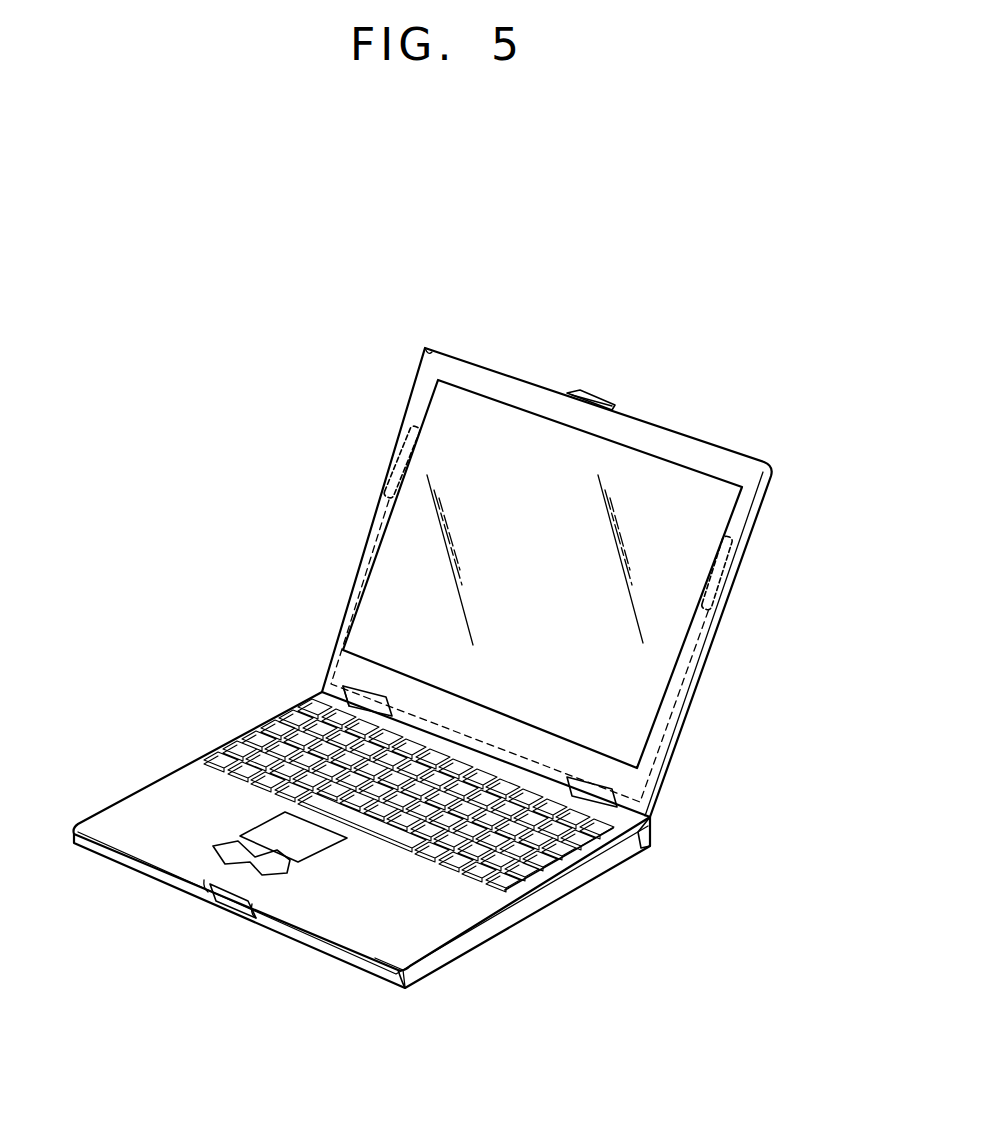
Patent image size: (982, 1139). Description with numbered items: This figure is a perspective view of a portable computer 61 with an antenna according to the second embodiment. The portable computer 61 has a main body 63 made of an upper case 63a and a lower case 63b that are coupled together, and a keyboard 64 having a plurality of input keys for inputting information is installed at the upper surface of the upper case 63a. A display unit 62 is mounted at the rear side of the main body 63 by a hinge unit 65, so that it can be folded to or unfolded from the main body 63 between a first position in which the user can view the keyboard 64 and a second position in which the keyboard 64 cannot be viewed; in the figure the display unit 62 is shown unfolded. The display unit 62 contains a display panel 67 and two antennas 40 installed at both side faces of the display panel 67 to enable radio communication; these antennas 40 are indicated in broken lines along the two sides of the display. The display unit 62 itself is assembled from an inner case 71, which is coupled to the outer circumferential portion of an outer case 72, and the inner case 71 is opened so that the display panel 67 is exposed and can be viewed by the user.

The antenna 40 is at (398, 450).
The portable computer 61 is at (322, 528).
The display unit 62 is at (748, 470).
The main body 63 is at (433, 978).
The upper case 63a is at (162, 795).
The lower case 63b is at (535, 900).
The keyboard 64 is at (280, 722).
The hinge unit 65 is at (648, 835).
The display panel 67 is at (663, 478).
The inner case 71 is at (483, 384).
The outer case 72 is at (708, 672).